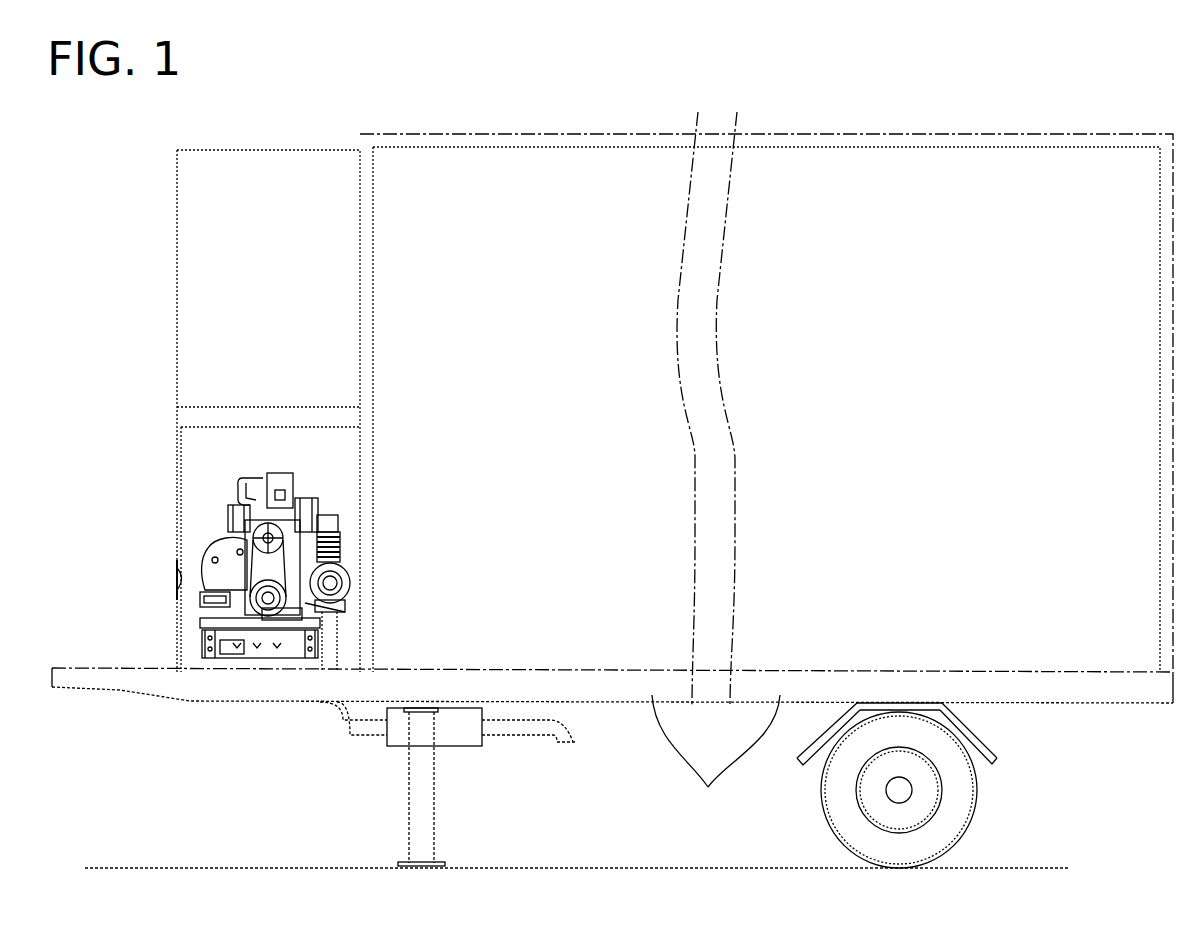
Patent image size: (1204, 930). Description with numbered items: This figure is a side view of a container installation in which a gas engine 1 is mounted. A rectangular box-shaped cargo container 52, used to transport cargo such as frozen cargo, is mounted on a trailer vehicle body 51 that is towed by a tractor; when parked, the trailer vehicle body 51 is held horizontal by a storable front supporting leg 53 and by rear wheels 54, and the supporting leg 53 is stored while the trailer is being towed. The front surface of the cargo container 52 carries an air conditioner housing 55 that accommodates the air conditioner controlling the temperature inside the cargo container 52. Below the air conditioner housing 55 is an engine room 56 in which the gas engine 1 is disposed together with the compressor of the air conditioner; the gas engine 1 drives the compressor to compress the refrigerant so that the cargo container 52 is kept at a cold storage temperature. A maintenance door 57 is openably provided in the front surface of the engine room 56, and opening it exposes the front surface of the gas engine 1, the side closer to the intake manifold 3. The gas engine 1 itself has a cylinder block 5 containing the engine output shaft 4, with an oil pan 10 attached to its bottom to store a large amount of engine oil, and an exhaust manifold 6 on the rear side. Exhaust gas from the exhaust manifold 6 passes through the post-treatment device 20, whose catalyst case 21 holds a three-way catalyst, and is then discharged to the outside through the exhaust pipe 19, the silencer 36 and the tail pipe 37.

The gas engine 1 is at (293, 552).
The intake manifold 3 is at (230, 520).
The engine output shaft 4 is at (282, 622).
The cylinder block 5 is at (250, 632).
The exhaust manifold 6 is at (320, 513).
The oil pan 10 is at (240, 650).
The exhaust pipe 19 is at (340, 728).
The post-treatment device 20 is at (350, 607).
The catalyst case 21 is at (352, 578).
The silencer 36 is at (467, 740).
The tail pipe 37 is at (567, 735).
The trailer vehicle body 51 is at (716, 467).
The cargo container 52 is at (647, 135).
The supporting leg 53 is at (427, 803).
The rear wheels 54 is at (960, 803).
The air conditioner housing 55 is at (167, 197).
The engine room 56 is at (332, 493).
The maintenance door 57 is at (185, 578).